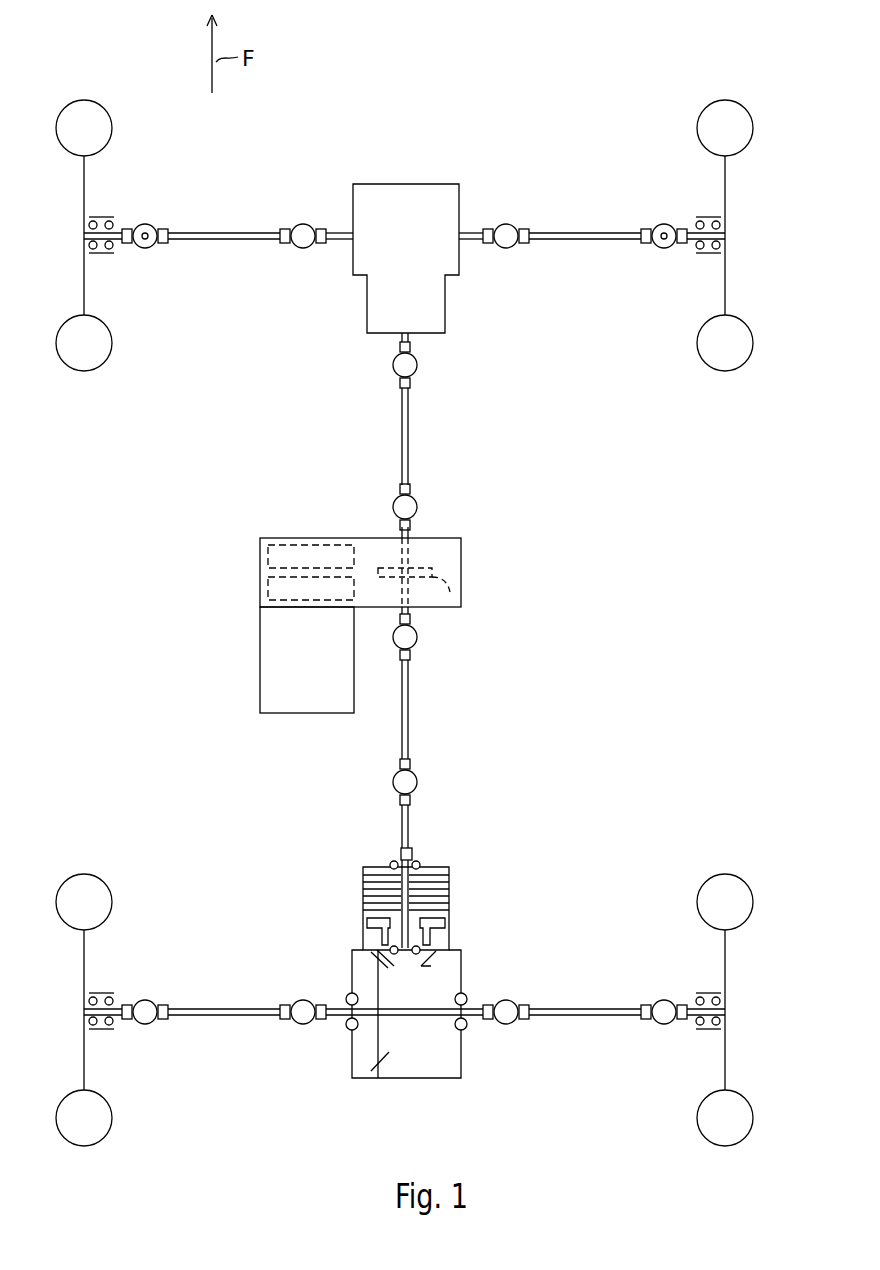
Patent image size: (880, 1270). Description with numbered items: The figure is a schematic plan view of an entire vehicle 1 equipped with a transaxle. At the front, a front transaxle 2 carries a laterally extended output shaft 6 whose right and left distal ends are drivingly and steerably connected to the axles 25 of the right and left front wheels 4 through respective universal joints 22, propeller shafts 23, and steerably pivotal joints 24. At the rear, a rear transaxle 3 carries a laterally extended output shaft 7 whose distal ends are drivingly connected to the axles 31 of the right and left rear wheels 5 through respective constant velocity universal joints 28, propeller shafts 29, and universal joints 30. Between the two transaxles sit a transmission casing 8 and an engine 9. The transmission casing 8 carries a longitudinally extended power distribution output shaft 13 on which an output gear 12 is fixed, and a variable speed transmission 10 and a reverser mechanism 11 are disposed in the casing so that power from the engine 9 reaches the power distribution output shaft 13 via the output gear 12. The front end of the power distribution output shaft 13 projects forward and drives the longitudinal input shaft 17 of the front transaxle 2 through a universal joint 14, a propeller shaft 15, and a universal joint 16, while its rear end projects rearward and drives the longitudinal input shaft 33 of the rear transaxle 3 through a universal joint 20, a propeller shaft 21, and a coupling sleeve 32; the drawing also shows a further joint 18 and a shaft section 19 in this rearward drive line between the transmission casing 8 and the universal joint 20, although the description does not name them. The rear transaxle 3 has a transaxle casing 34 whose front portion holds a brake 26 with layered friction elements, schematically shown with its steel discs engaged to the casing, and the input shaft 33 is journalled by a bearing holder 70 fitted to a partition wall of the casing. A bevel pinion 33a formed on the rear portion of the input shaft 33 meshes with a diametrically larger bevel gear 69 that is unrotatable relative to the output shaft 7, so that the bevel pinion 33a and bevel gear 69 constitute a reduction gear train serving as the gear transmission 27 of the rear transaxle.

The vehicle 1 is at (615, 100).
The front transaxle 2 is at (461, 188).
The rear transaxle 3 is at (461, 878).
The front wheels 4 is at (72, 102).
The rear wheels 5 is at (73, 877).
The output shaft 6 is at (345, 231).
The output shaft 7 is at (470, 1003).
The transmission casing 8 is at (463, 571).
The engine 9 is at (324, 683).
The variable speed transmission 10 is at (262, 581).
The reverser mechanism 11 is at (262, 547).
The output gear 12 is at (470, 601).
The power distribution output shaft 13 is at (411, 532).
The universal joint 14 is at (392, 508).
The propeller shaft 15 is at (410, 440).
The universal joint 16 is at (392, 366).
The input shaft 17 is at (412, 338).
The coupling 18 is at (398, 642).
The propeller shaft 19 is at (410, 712).
The universal joint 20 is at (392, 784).
The propeller shaft 21 is at (410, 822).
The universal joints 22 is at (303, 250).
The propeller shafts 23 is at (228, 232).
The steerably pivotal joints 24 is at (147, 250).
The axles 25 is at (96, 216).
The brake 26 is at (365, 932).
The gear transmission 27 is at (368, 964).
The constant velocity universal joints 28 is at (303, 1026).
The propeller shafts 29 is at (228, 1008).
The universal joints 30 is at (147, 1026).
The axles 31 is at (98, 992).
The coupling sleeve 32 is at (391, 861).
The input shaft 33 is at (420, 862).
The bevel pinion 33a is at (462, 957).
The transaxle casing 34 is at (445, 1081).
The bevel gear 69 is at (379, 1079).
The bearing holder 70 is at (448, 928).